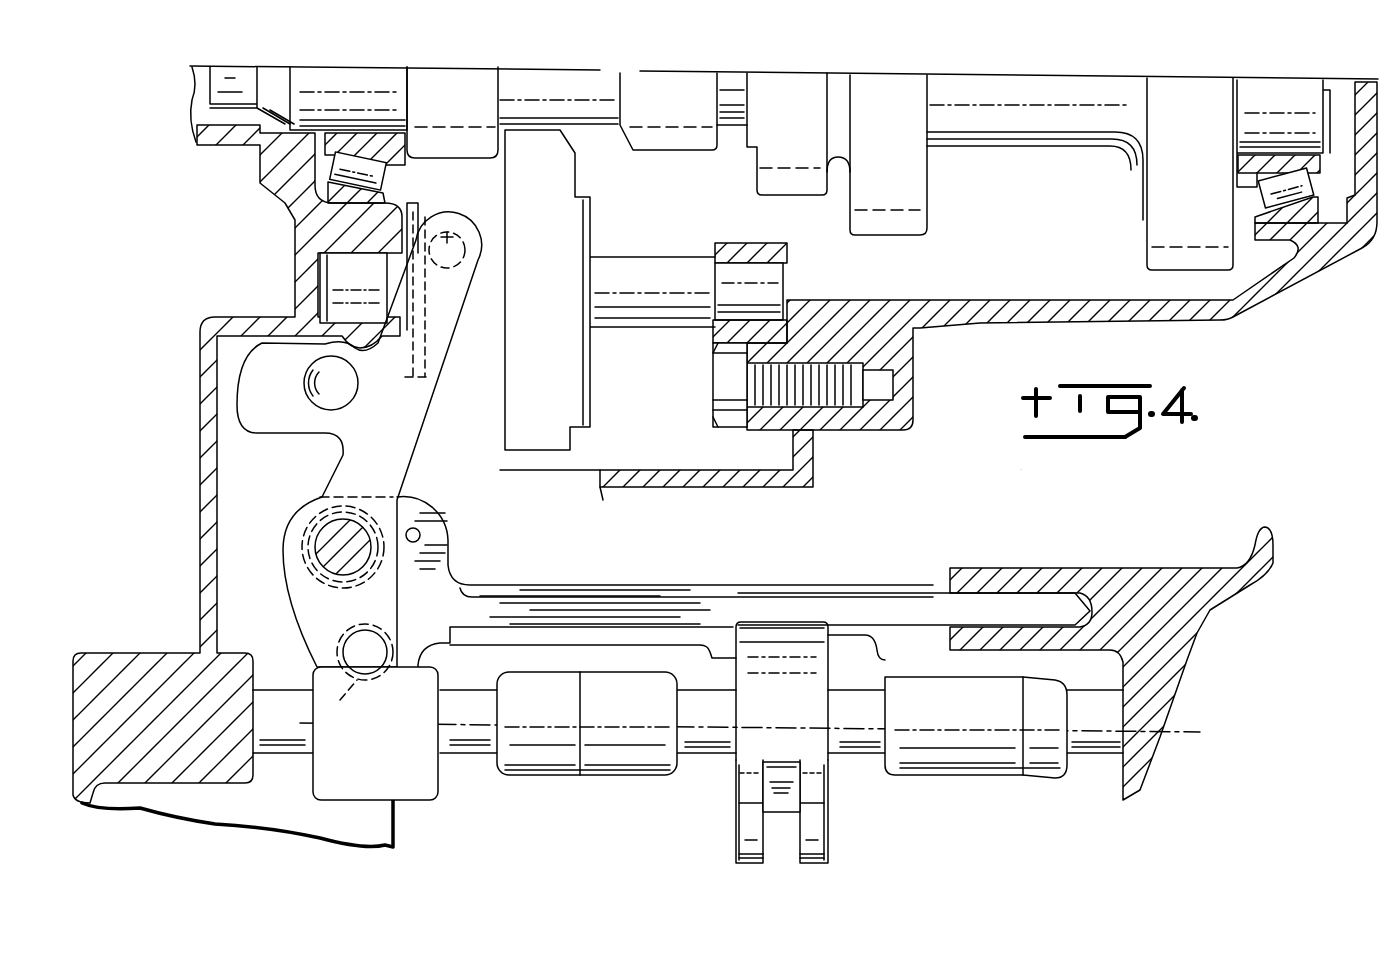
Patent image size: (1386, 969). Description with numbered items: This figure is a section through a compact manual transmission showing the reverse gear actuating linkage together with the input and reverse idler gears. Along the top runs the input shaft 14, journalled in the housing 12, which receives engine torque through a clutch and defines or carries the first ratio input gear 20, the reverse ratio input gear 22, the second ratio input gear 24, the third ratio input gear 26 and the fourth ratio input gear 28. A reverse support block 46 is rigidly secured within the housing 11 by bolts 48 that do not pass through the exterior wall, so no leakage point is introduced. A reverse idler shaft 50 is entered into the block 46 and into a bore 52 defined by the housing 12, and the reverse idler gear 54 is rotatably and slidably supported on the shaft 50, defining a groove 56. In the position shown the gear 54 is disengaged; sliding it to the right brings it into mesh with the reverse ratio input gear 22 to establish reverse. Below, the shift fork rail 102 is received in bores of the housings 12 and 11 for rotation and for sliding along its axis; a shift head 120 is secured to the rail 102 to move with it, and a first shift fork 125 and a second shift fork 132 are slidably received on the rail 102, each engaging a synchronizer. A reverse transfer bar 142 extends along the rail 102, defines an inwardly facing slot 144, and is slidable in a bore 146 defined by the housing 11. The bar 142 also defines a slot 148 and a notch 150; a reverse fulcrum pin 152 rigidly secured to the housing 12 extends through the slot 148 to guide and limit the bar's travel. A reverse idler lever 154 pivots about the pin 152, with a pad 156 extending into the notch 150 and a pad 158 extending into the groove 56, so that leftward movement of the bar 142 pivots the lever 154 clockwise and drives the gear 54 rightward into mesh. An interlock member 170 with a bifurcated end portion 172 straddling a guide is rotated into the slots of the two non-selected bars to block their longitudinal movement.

The housing 11 is at (1230, 322).
The housing 12 is at (207, 595).
The input shaft 14 is at (585, 78).
The first ratio input gear 20 is at (470, 50).
The reverse ratio input gear 22 is at (673, 143).
The second ratio input gear 24 is at (803, 187).
The third ratio input gear 26 is at (903, 228).
The fourth ratio input gear 28 is at (1163, 233).
The reverse support block 46 is at (758, 224).
The bolts 48 is at (840, 407).
The reverse idler shaft 50 is at (683, 240).
The bore 52 is at (327, 257).
The reverse idler gear 54 is at (565, 420).
The groove 56 is at (447, 378).
The shift fork rail 102 is at (723, 755).
The shift head 120 is at (420, 790).
The first shift fork 125 is at (620, 770).
The shift fork 132 is at (953, 778).
The reverse transfer bar 142 is at (770, 565).
The slot 144 is at (833, 623).
The bore 146 is at (1027, 590).
The slot 148 is at (430, 535).
The notch 150 is at (345, 648).
The reverse fulcrum pin 152 is at (330, 548).
The reverse idler lever 154 is at (347, 463).
The pad 156 is at (340, 700).
The pad 158 is at (445, 232).
The interlock member 170 is at (822, 682).
The bifurcated end portion 172 is at (763, 850).